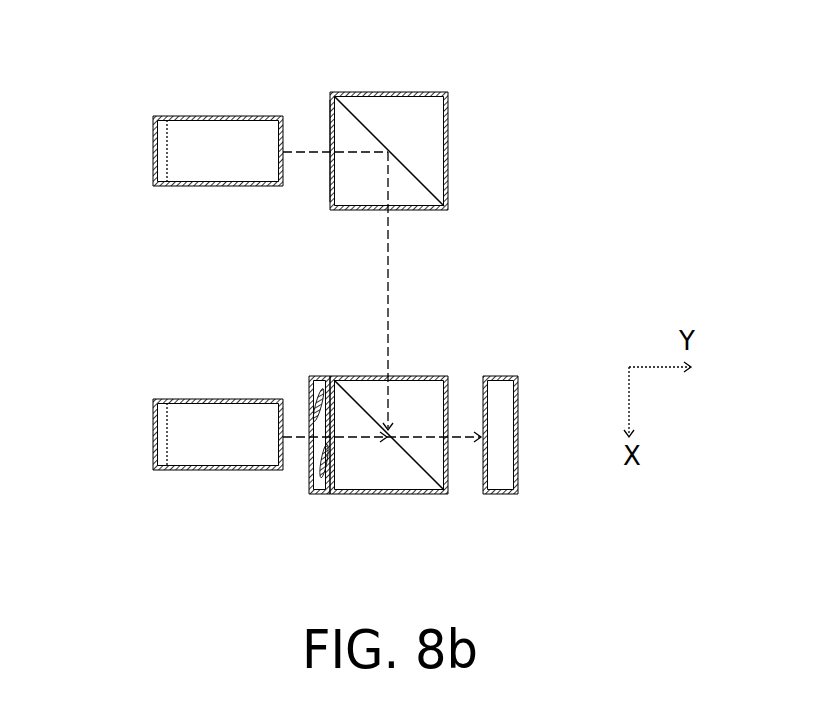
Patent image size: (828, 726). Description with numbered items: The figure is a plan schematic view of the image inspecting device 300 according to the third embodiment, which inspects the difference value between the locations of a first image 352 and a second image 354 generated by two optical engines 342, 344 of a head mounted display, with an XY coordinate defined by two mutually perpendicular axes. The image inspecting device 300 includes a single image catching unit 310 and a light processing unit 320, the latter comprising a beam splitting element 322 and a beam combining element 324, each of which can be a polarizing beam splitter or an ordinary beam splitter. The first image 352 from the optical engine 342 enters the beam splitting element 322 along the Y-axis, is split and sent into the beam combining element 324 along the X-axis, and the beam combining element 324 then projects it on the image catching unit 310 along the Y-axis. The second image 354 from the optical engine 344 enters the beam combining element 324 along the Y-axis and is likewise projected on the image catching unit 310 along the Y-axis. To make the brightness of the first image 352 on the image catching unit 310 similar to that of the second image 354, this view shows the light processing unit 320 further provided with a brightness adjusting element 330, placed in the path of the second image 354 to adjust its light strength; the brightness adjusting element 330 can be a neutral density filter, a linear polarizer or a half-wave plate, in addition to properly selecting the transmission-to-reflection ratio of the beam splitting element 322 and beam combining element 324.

The image inspecting device 300 is at (410, 447).
The image catching unit 310 is at (518, 435).
The light processing unit 320 is at (393, 119).
The beam splitting element 322 is at (413, 172).
The beam combining element 324 is at (358, 398).
The brightness adjusting element 330 is at (331, 431).
The optical engine 342 is at (153, 152).
The optical engine 344 is at (153, 436).
The first image 352 is at (326, 150).
The second image 354 is at (303, 441).